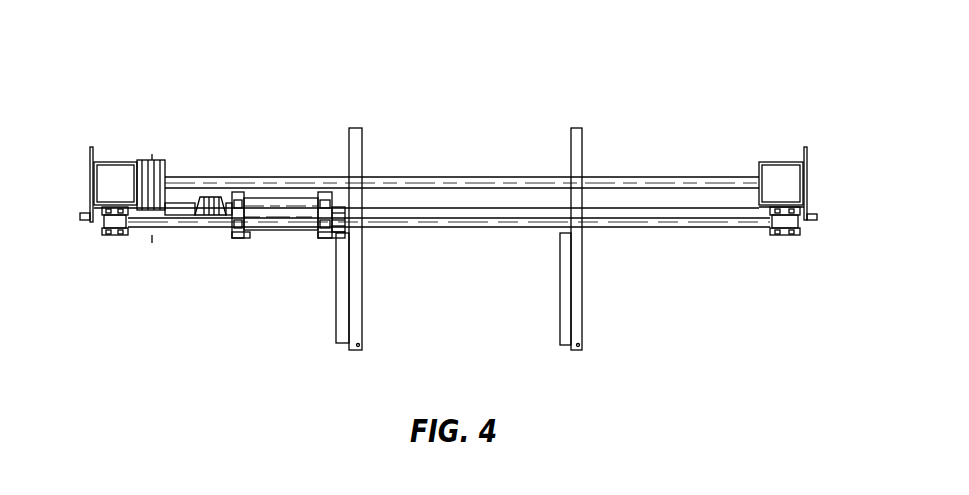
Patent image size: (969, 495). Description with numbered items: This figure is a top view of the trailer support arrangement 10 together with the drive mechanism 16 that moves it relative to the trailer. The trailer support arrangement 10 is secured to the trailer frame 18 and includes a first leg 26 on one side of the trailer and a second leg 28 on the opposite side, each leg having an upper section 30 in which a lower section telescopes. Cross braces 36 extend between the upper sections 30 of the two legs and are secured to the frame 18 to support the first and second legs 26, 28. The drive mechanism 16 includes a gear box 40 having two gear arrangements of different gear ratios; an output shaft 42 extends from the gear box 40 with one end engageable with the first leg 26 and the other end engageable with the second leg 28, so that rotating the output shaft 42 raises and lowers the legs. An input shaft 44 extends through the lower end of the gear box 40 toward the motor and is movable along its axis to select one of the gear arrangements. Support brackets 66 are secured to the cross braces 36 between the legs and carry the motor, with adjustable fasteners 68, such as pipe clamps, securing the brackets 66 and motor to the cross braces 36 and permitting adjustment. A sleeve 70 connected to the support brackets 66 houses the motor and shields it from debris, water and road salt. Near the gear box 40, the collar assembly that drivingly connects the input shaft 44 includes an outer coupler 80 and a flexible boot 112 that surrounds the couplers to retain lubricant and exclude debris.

The trailer support arrangement 10 is at (677, 56).
The drive mechanism 16 is at (251, 232).
The frame 18 is at (357, 150).
The first leg 26 is at (101, 96).
The second leg 28 is at (762, 128).
The upper section 30 is at (121, 160).
The cross braces 36 is at (630, 212).
The gear box 40 is at (165, 162).
The output shaft 42 is at (674, 176).
The input shaft 44 is at (180, 218).
The support brackets 66 is at (245, 198).
The adjustable fasteners 68 is at (115, 238).
The sleeve 70 is at (286, 205).
The outer coupler 80 is at (224, 206).
The boot 112 is at (212, 228).